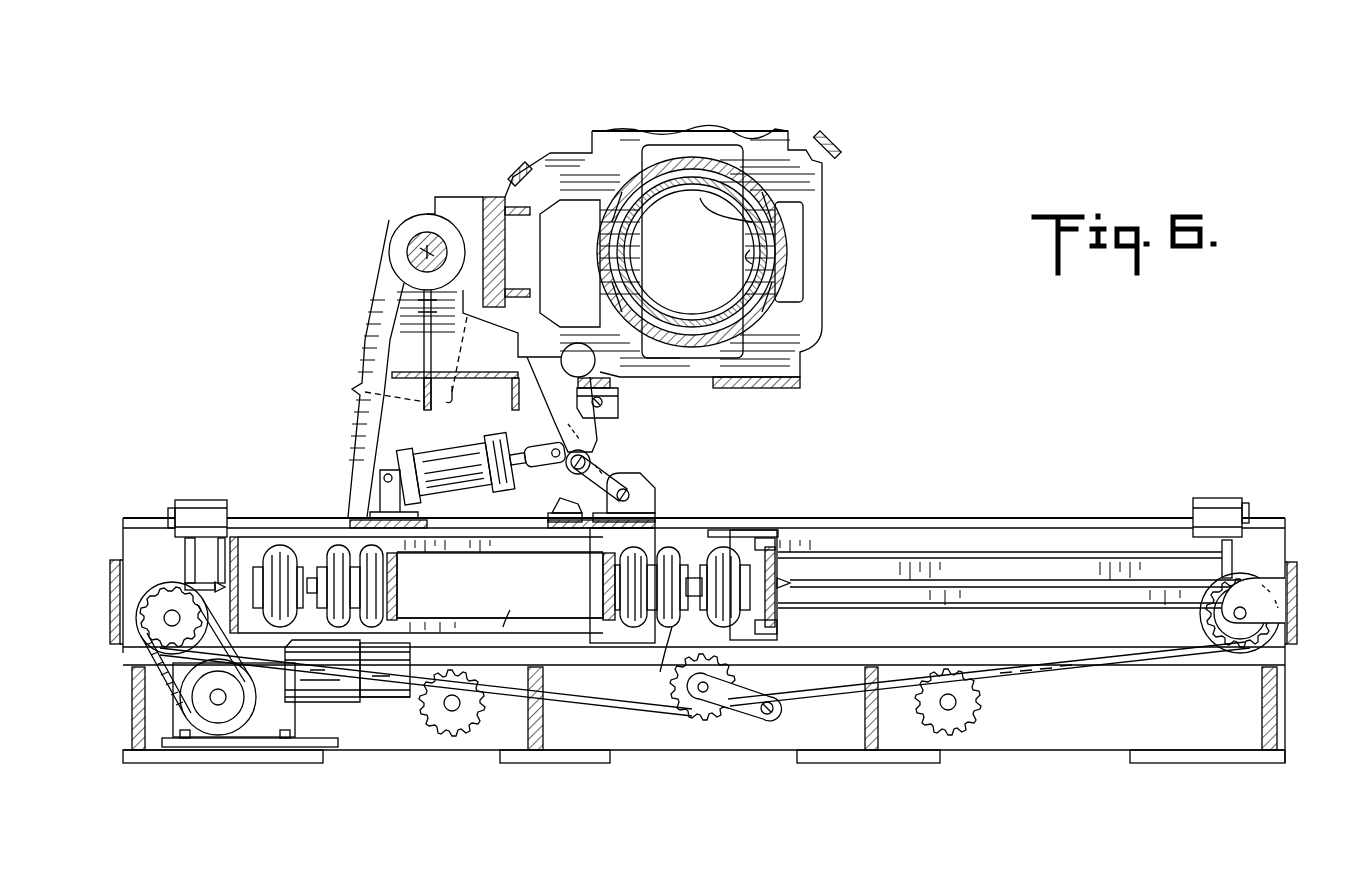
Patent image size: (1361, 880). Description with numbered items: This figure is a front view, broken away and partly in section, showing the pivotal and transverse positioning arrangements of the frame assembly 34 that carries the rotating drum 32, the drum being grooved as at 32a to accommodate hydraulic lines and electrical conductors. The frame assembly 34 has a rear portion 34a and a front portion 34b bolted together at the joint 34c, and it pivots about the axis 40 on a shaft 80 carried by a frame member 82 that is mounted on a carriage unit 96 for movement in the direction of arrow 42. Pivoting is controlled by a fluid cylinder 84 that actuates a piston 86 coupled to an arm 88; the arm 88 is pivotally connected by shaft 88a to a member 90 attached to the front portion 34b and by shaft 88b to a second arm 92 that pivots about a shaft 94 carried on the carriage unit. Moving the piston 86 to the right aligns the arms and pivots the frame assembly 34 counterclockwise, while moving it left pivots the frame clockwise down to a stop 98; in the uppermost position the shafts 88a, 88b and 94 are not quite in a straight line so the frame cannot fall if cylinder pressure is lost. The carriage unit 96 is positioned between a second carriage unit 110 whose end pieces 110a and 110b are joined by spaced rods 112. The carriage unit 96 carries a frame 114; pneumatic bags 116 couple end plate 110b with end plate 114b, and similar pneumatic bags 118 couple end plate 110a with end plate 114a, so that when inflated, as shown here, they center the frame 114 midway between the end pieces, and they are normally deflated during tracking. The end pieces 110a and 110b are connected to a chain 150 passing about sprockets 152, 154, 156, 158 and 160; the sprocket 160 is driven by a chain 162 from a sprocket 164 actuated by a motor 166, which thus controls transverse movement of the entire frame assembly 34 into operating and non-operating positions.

The rotating drum 32 is at (648, 206).
The groove 32a is at (760, 262).
The frame assembly 34 is at (752, 109).
The rear portion 34a is at (358, 310).
The front portion 34b is at (607, 131).
The joint 34c is at (490, 197).
The axis 40 is at (432, 250).
The arrow 42 is at (900, 485).
The shaft 80 is at (412, 243).
The frame member 82 is at (368, 413).
The fluid cylinder 84 is at (435, 458).
The piston 86 is at (528, 470).
The arm 88 is at (603, 428).
The shaft 88a is at (578, 390).
The shaft 88b is at (600, 455).
The member 90 is at (620, 405).
The second arm 92 is at (590, 468).
The shaft 94 is at (640, 493).
The carriage unit 96 is at (675, 521).
The stop 98 is at (550, 505).
The second carriage unit 110 is at (803, 522).
The end piece 110a is at (777, 628).
The end piece 110b is at (232, 537).
The rods 112 is at (510, 610).
The frame 114 is at (420, 556).
The end plate 114a is at (605, 592).
The end plate 114b is at (397, 597).
The pneumatic bags 116 is at (277, 560).
The pneumatic bags 118 is at (660, 672).
The chain 150 is at (1090, 583).
The sprocket 152 is at (1283, 648).
The sprocket 154 is at (952, 722).
The sprocket 156 is at (700, 705).
The sprocket 158 is at (448, 722).
The sprocket 160 is at (150, 612).
The chain 162 is at (160, 685).
The sprocket 164 is at (222, 720).
The motor 166 is at (352, 703).